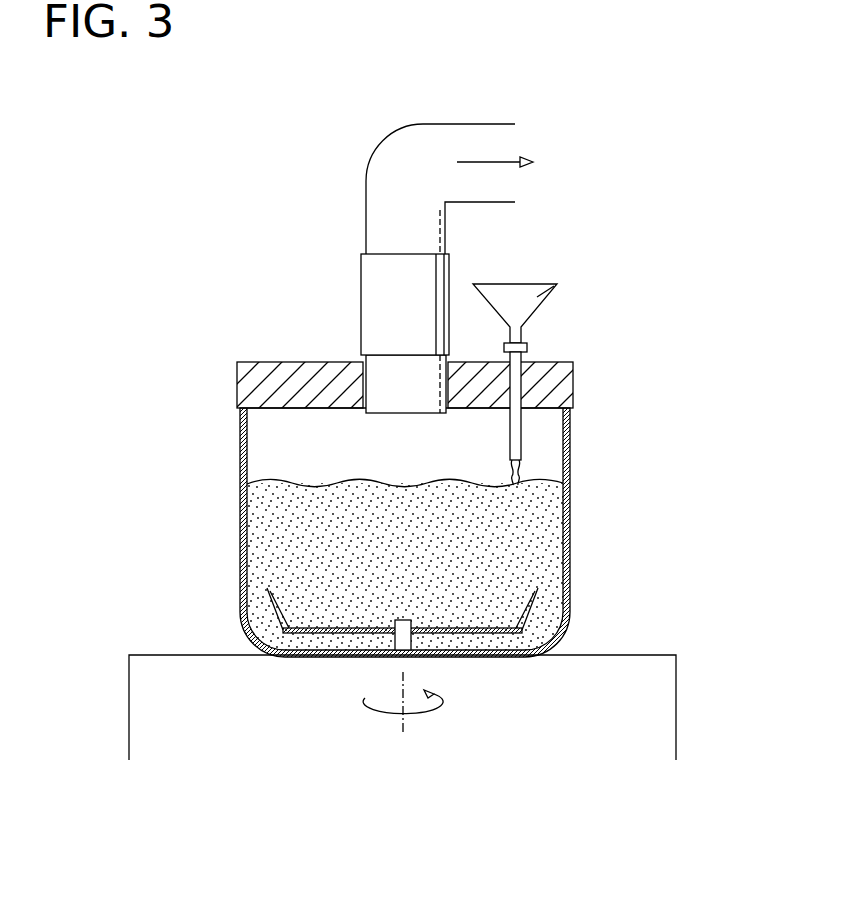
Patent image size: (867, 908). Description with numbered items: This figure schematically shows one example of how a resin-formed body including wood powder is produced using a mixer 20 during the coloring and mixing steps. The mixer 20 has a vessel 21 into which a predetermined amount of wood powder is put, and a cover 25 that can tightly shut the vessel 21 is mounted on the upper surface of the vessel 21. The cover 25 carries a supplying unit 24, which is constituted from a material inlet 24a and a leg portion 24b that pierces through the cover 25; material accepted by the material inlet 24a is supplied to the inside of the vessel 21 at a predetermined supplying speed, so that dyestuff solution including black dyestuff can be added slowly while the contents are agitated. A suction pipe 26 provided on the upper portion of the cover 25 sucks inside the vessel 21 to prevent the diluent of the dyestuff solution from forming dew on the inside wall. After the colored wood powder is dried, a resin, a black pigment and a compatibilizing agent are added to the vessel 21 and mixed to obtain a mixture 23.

The mixer 20 is at (602, 448).
The vessel 21 is at (570, 513).
The mixture 23 is at (550, 542).
The supplying unit 24 is at (537, 330).
The material inlet 24a is at (538, 297).
The leg portion 24b is at (520, 432).
The cover 25 is at (278, 362).
The suction pipe 26 is at (366, 196).